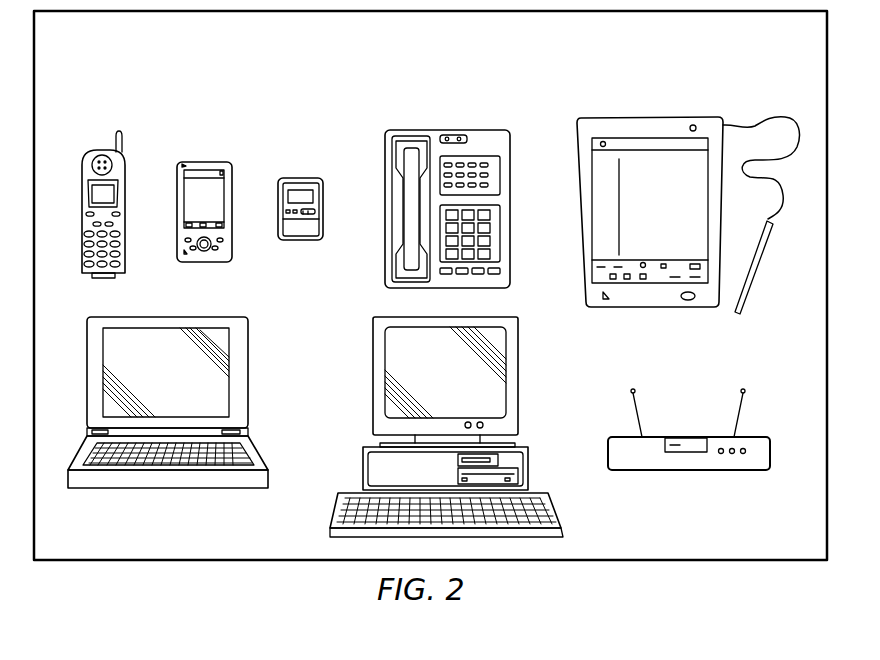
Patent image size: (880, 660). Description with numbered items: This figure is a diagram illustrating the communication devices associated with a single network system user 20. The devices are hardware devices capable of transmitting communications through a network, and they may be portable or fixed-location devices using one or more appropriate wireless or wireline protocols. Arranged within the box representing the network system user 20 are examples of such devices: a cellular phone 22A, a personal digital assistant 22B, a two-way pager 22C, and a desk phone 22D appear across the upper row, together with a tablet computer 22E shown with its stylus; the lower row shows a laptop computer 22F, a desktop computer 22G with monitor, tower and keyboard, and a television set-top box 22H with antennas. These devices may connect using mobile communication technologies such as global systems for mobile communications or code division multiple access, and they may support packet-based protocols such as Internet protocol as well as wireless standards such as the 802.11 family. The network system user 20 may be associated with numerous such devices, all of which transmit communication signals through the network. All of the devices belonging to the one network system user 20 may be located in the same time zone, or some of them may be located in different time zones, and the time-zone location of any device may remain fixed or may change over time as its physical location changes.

The network system user 20 is at (278, 561).
The cellular phone 22A is at (102, 150).
The personal digital assistant 22B is at (200, 162).
The two-way pager 22C is at (299, 178).
The desk phone 22D is at (455, 130).
The tablet computer 22E is at (657, 117).
The laptop computer 22F is at (167, 489).
The desktop computer 22G is at (363, 460).
The television set-top box 22H is at (689, 470).